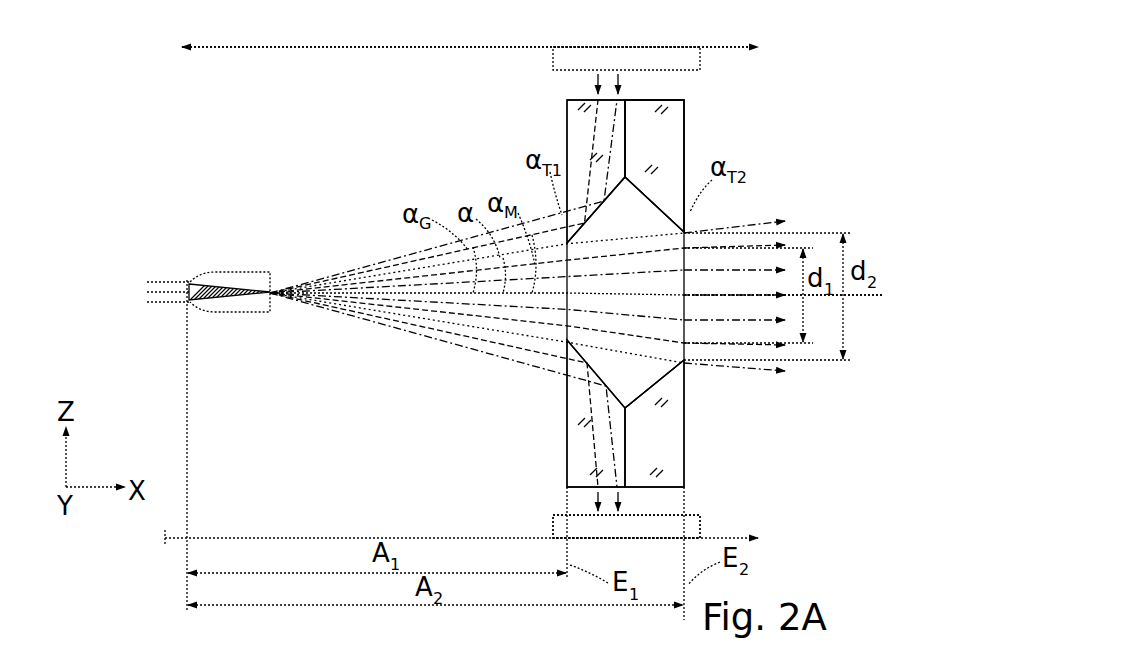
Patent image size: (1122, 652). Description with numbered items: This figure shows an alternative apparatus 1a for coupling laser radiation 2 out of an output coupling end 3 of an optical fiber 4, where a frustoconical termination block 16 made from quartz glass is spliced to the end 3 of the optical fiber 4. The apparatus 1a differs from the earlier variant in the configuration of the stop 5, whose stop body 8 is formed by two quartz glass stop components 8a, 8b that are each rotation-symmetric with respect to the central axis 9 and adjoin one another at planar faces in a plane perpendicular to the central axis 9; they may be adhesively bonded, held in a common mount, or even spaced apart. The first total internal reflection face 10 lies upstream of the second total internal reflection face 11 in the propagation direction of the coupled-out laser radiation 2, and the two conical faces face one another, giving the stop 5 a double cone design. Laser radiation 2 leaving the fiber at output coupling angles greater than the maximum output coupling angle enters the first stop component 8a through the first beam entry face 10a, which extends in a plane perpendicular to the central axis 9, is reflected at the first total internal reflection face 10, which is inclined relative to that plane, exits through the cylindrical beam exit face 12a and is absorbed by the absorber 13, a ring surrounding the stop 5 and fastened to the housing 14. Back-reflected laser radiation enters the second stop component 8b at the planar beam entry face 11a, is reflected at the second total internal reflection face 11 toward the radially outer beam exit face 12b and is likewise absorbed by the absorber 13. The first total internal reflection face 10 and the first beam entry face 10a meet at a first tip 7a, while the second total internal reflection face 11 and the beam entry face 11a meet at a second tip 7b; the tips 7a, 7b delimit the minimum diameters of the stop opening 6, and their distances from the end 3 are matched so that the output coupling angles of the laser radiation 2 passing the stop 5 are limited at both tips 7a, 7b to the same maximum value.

The apparatus 1a is at (745, 40).
The laser radiation 2 is at (370, 335).
The output coupling end of the optical fiber 3 is at (200, 283).
The optical fiber 4 is at (163, 271).
The stop 5 is at (508, 160).
The stop opening 6 is at (700, 230).
The first tip 7a is at (556, 268).
The second tip 7b is at (690, 355).
The stop body 8 is at (553, 404).
The first stop component 8a is at (572, 470).
The second stop component 8b is at (690, 462).
The central axis 9 is at (880, 298).
The first total internal reflection face 10 is at (578, 162).
The first beam entry face 10a is at (566, 115).
The second total internal reflection face 11 is at (658, 178).
The beam entry face 11a is at (685, 110).
The cylindrical beam exit face 12a is at (565, 497).
The beam exit face 12b is at (655, 498).
The absorber 13 is at (598, 48).
The housing 14 is at (330, 45).
The termination block 16 is at (217, 313).